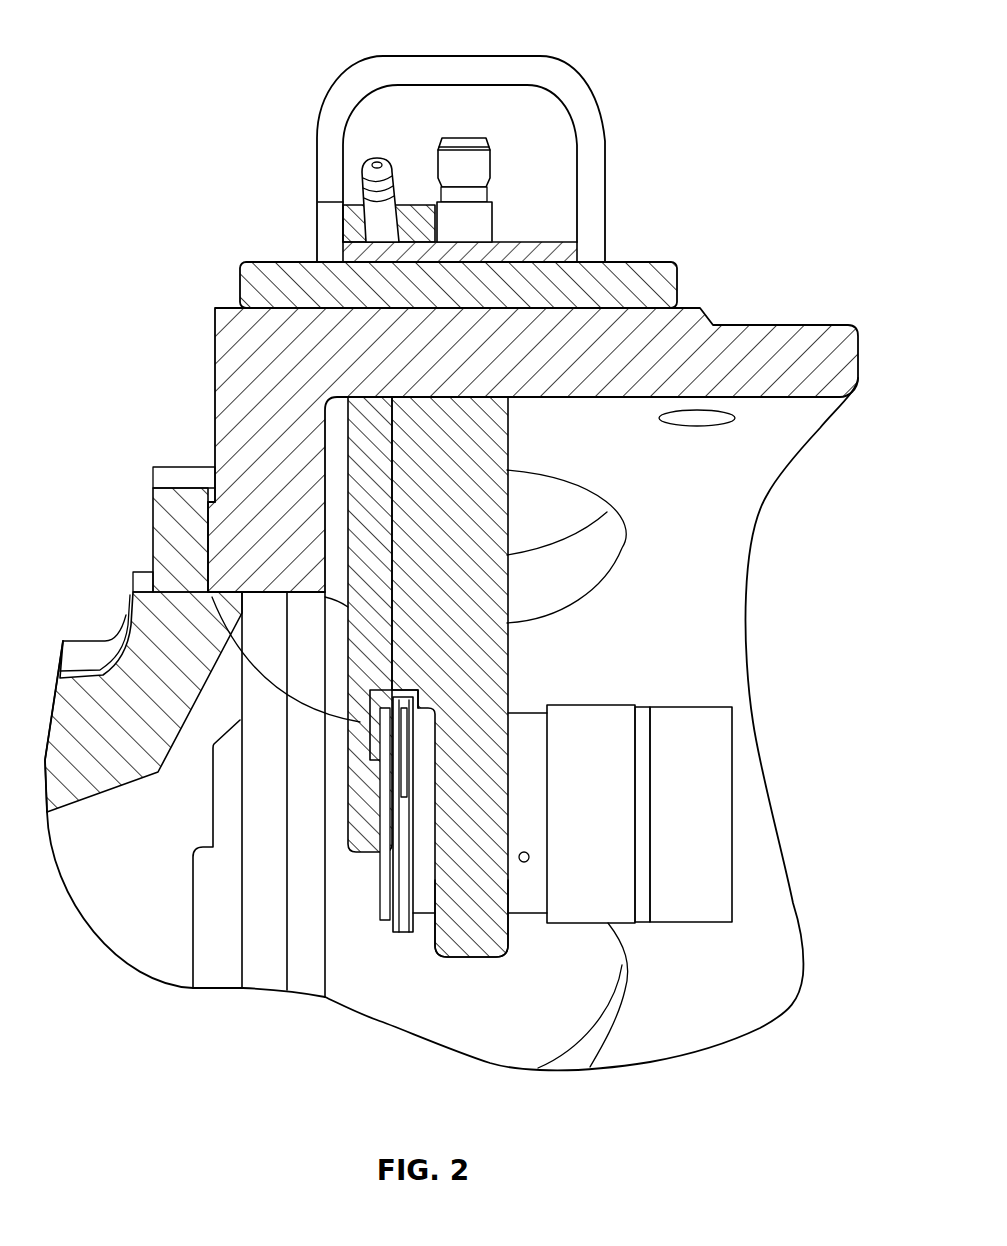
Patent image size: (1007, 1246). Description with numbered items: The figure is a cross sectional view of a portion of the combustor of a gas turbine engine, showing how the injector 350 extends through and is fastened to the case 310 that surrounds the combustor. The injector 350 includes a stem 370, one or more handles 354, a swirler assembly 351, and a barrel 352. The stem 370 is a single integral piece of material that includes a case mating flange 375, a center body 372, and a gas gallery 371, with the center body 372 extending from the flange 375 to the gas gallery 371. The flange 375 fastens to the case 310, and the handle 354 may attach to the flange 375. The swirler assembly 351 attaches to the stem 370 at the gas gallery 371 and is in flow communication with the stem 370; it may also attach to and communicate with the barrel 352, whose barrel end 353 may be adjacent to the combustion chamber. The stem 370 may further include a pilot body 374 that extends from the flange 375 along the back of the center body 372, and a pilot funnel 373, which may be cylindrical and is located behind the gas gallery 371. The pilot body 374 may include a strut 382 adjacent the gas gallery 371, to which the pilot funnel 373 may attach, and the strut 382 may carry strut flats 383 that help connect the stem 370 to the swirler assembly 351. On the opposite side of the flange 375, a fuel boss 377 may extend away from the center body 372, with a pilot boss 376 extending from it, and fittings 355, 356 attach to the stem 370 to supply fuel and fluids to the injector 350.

The injector 350 is at (203, 47).
The case 310 is at (790, 338).
The stem 370 is at (542, 424).
The handle 354 is at (593, 147).
The fitting 355 is at (362, 185).
The fitting 356 is at (480, 174).
The case mating flange 375 is at (640, 285).
The pilot boss 376 is at (428, 213).
The fuel boss 377 is at (548, 252).
The pilot body 374 is at (360, 520).
The center body 372 is at (490, 643).
The gas gallery 371 is at (493, 802).
The pilot funnel 373 is at (355, 812).
The strut 382 is at (188, 615).
The strut flats 383 is at (373, 732).
The swirler assembly 351 is at (405, 933).
The barrel 352 is at (570, 915).
The barrel end 353 is at (692, 915).